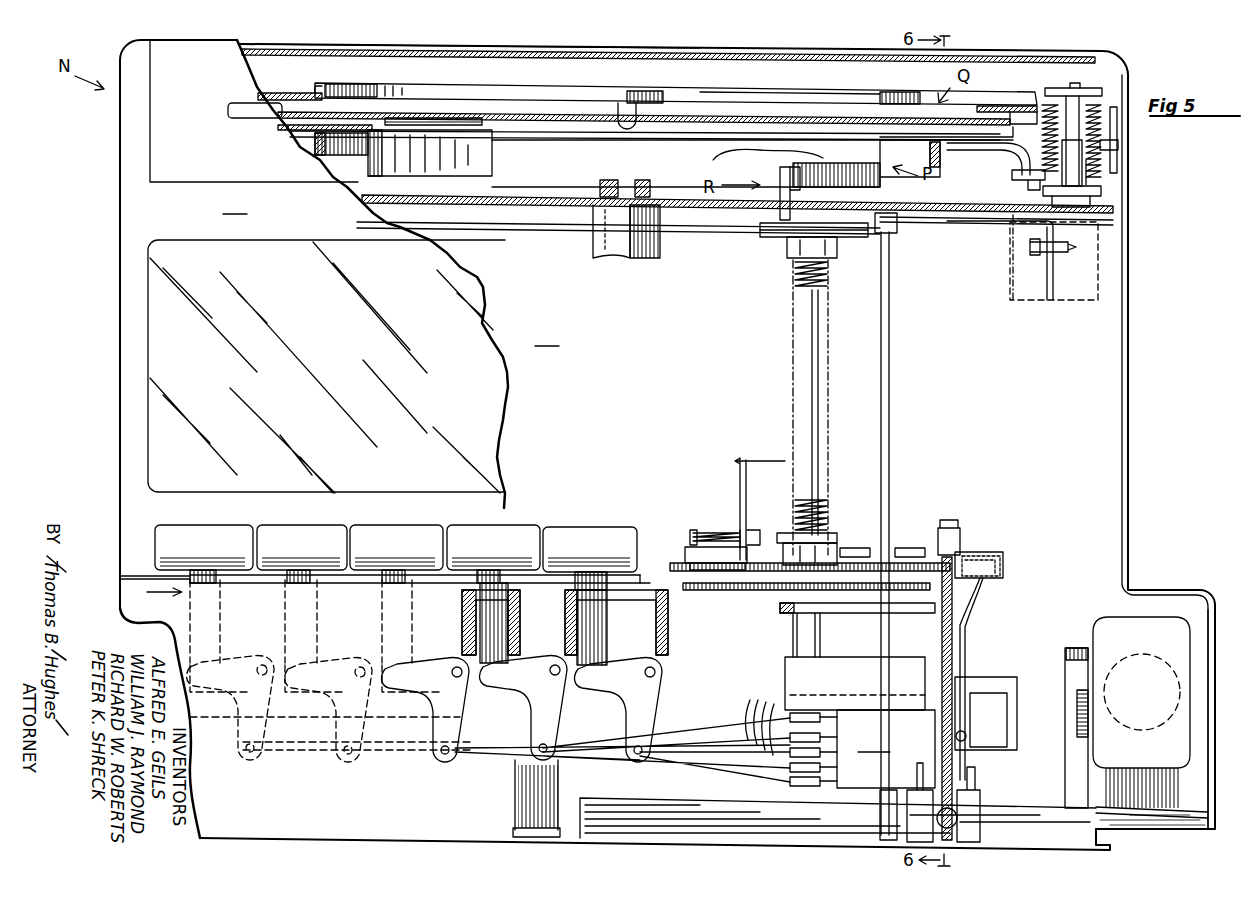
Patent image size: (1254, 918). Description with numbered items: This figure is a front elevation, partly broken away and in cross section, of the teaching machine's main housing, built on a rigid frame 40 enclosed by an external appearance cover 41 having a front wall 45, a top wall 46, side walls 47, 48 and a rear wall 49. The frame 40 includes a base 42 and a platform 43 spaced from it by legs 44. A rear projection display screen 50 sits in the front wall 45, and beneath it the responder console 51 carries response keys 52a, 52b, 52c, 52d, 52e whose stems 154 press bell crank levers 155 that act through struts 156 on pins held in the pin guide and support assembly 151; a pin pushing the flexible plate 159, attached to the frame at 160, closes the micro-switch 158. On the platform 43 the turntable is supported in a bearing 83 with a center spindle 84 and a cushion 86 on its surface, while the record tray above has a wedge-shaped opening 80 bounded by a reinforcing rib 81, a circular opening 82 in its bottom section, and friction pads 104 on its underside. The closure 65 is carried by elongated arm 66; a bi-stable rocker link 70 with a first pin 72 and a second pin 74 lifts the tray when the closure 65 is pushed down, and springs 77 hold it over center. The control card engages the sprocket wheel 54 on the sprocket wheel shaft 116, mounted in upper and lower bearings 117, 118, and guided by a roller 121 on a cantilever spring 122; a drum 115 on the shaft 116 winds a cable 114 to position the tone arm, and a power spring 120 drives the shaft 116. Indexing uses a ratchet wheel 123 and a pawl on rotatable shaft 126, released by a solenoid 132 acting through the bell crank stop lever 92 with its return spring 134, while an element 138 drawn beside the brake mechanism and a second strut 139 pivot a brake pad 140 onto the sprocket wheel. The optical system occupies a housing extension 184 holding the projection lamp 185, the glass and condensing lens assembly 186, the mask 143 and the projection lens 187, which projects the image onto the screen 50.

The rigid frame 40 is at (1138, 270).
The external appearance cover 41 is at (590, 46).
The base 42 is at (1110, 841).
The platform 43 is at (482, 204).
The legs 44 is at (595, 249).
The front wall 45 is at (235, 204).
The top wall 46 is at (374, 41).
The side wall 47 is at (120, 236).
The side wall 48 is at (1129, 380).
The rear wall 49 is at (547, 336).
The rear projection display screen 50 is at (156, 345).
The console 51 is at (645, 590).
The response key 52a is at (197, 525).
The response key 52b is at (297, 525).
The response key 52c is at (392, 525).
The response key 52d is at (506, 525).
The response key 52e is at (590, 527).
The sprocket wheel 54 is at (905, 556).
The closure 65 is at (170, 125).
The elongated arm 66 is at (1118, 165).
The bi-stable rocker link 70 is at (1075, 100).
The first pin 72 is at (1120, 147).
The pin 74 is at (1014, 176).
The springs 77 is at (1097, 170).
The wedge-shaped opening 80 is at (712, 96).
The upstanding reinforcing rib 81 is at (533, 93).
The circular opening 82 is at (362, 138).
The bearing 83 is at (600, 185).
The center spindle 84 is at (627, 103).
The cushion 86 is at (455, 140).
The bell crank lever 92 is at (963, 226).
The friction pads 104 is at (258, 95).
The cable 114 is at (543, 228).
The drum 115 is at (850, 238).
The sprocket wheel shaft 116 is at (811, 312).
The upper bearing 117 is at (786, 248).
The lower bearing 118 is at (826, 546).
The power spring 120 is at (796, 276).
The roller 121 is at (954, 530).
The cantilever spring 122 is at (975, 548).
The ratchet wheel 123 is at (724, 592).
The rotatable shaft 126 is at (891, 397).
The solenoid 132 is at (1028, 302).
The return spring 134 is at (1030, 248).
The spring 138 is at (707, 524).
The second strut 139 is at (765, 460).
The brake pad 140 is at (688, 548).
The mask 143 is at (960, 667).
The pin guide and support assembly 151 is at (886, 749).
The stems 154 is at (575, 613).
The bell crank levers 155 is at (540, 696).
The struts 156 is at (646, 732).
The micro-switch 158 is at (966, 742).
The flexible plate 159 is at (975, 615).
The frame attachment point 160 is at (1004, 562).
The housing extension 184 is at (1168, 592).
The projection lamp 185 is at (1107, 630).
The heat resistant glass and condensing lens assembly 186 is at (1066, 652).
The projection lens 187 is at (784, 668).